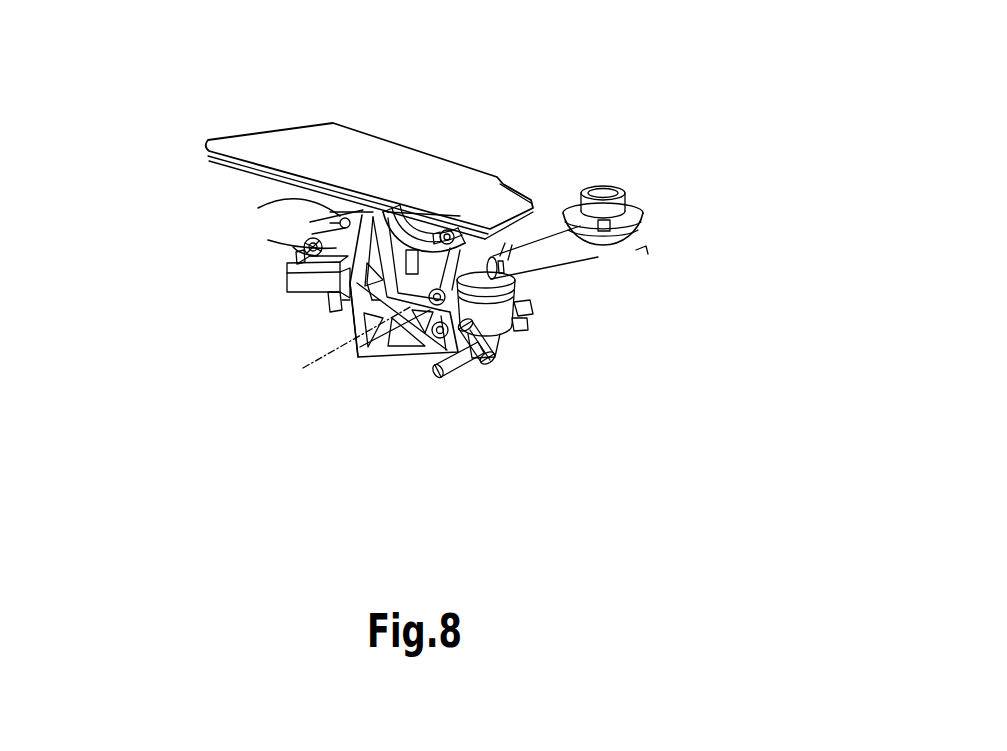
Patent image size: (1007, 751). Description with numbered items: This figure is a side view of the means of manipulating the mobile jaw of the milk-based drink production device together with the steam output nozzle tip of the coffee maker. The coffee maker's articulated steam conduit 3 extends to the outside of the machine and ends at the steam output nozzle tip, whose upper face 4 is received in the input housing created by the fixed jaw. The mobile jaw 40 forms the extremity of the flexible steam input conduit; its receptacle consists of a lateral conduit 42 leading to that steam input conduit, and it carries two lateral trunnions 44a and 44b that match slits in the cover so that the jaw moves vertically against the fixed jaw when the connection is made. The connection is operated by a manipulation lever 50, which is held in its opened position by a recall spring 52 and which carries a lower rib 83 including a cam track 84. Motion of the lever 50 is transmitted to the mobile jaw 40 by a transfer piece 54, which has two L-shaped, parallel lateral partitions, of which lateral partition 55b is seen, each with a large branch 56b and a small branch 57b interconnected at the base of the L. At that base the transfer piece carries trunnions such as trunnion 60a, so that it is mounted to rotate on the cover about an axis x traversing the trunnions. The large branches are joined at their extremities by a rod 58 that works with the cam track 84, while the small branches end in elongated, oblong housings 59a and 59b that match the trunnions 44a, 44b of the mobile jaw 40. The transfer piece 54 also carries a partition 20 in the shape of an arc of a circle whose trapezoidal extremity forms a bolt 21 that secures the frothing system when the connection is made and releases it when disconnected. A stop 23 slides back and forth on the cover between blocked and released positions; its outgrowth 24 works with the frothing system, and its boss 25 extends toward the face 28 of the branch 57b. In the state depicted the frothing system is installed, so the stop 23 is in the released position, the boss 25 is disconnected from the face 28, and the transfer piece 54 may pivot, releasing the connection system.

The manipulation lever 50 is at (288, 138).
The cam track 84 is at (412, 262).
The lower rib 83 is at (428, 222).
The recall spring 52 is at (499, 248).
The upper face 4 is at (513, 247).
The articulated steam conduit 3 is at (565, 266).
The rod 58 is at (330, 213).
The partition 20 is at (312, 226).
The bolt 21 is at (293, 247).
The large branch 56b is at (306, 255).
The stop 23 is at (338, 282).
The outgrowth 24 is at (338, 298).
The boss 25 is at (345, 305).
The face 28 is at (352, 310).
The axis x is at (303, 368).
The transfer piece 54 is at (361, 343).
The lateral partition 55b is at (361, 350).
The small branch 57b is at (424, 353).
The lateral conduit 42 is at (442, 373).
The trunnion 60a is at (446, 369).
The housing 59b is at (481, 358).
The lateral trunnion 44b is at (512, 323).
The mobile jaw 40 is at (497, 311).
The housing 59a is at (539, 303).
The lateral trunnion 44a is at (532, 300).